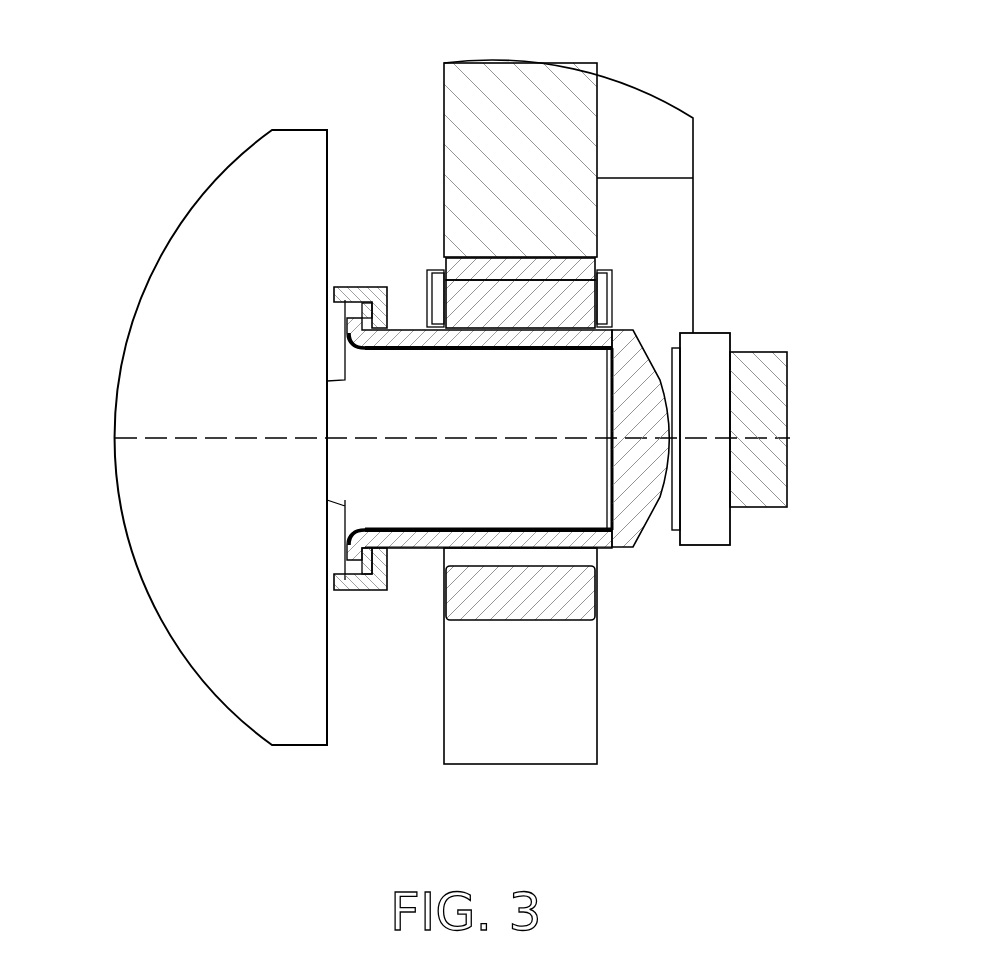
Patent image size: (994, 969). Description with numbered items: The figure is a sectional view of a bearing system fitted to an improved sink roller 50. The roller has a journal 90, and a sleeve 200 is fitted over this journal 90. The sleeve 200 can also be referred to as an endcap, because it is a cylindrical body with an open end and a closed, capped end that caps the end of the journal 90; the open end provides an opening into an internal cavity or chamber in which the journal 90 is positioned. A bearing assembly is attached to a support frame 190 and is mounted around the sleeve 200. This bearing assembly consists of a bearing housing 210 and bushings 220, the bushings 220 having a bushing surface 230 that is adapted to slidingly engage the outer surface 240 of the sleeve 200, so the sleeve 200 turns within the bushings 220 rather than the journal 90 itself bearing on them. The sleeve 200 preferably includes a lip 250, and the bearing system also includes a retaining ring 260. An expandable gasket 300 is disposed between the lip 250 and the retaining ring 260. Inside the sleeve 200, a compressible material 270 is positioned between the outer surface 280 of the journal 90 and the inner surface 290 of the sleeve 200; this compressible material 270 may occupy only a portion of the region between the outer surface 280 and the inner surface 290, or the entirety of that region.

The sink roller 50 is at (183, 525).
The journal 90 is at (423, 457).
The support frame 190 is at (565, 102).
The sleeve 200 is at (632, 364).
The bearing housing 210 is at (567, 602).
The bushings 220 is at (602, 257).
The bushing surface 230 is at (534, 302).
The outer surface of sleeve 240 is at (563, 327).
The lip 250 is at (340, 553).
The retaining ring 260 is at (350, 298).
The compressible material 270 is at (410, 345).
The outer surface of journal 280 is at (490, 528).
The inner surface of sleeve 290 is at (560, 532).
The expandable gasket 300 is at (367, 313).